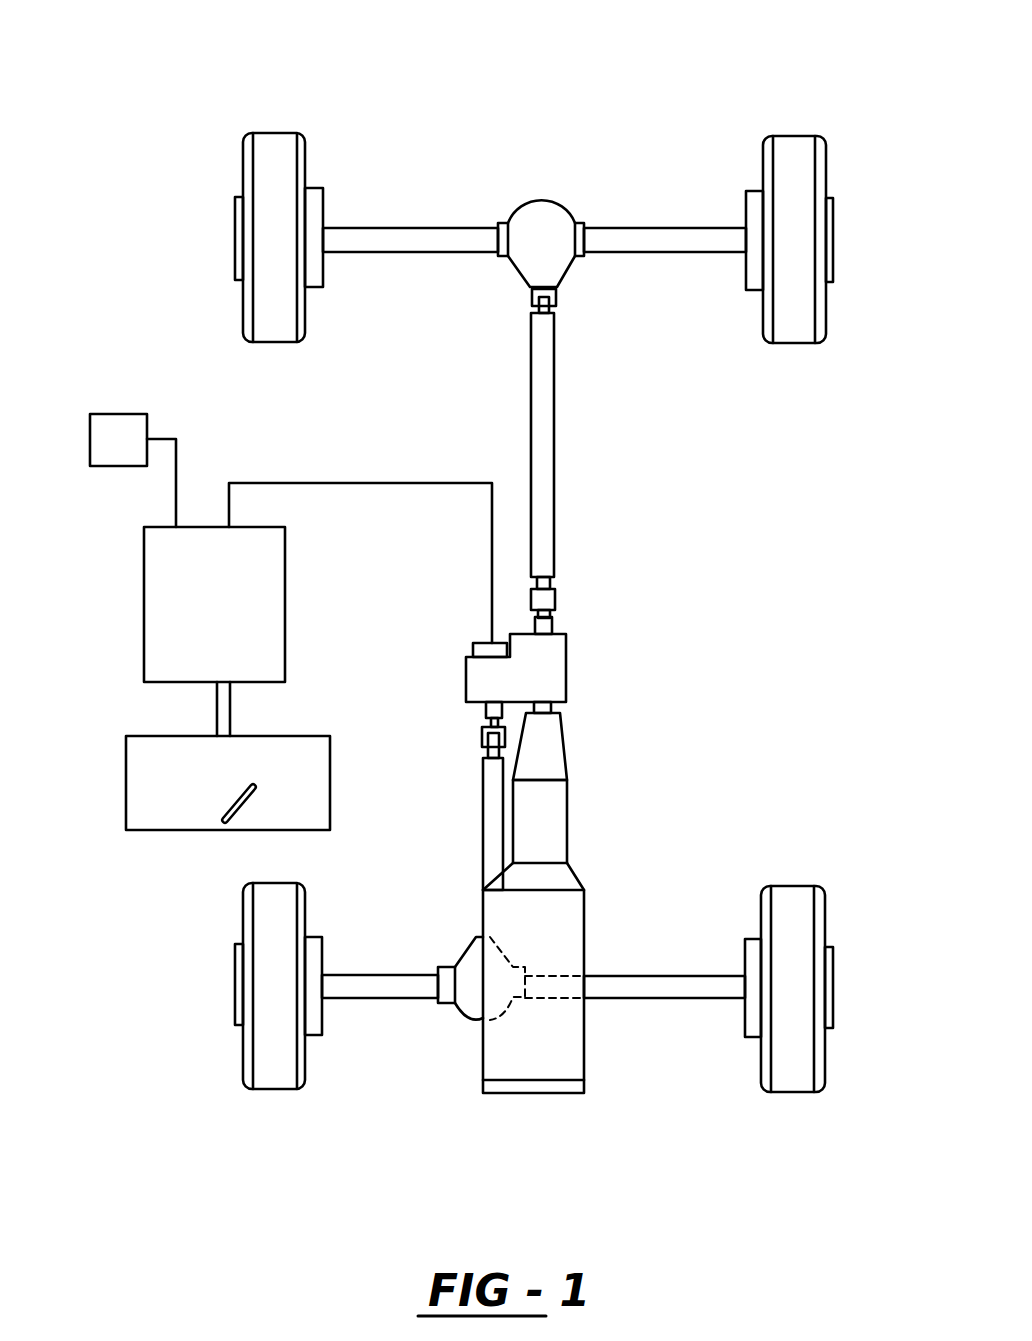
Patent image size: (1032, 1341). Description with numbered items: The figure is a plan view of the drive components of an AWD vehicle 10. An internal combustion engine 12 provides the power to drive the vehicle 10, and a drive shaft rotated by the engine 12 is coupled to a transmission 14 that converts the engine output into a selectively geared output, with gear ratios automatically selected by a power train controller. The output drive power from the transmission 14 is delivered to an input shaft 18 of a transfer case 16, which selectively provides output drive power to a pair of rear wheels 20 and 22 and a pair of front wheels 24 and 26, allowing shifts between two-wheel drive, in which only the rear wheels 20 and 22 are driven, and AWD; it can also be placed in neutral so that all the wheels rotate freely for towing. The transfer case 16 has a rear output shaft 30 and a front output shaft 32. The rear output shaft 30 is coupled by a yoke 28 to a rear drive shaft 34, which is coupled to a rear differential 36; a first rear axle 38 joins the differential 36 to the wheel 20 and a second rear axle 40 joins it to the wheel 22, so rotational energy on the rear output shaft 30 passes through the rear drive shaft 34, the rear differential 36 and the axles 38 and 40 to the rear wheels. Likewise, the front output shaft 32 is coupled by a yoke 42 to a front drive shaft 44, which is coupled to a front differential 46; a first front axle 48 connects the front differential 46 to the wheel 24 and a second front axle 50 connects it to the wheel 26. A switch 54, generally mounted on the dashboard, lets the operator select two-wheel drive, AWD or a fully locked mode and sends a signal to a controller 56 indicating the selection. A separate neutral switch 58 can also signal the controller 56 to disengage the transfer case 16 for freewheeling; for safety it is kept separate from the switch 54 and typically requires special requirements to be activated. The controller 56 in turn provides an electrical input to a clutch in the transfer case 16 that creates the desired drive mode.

The vehicle 10 is at (723, 95).
The internal combustion engine 12 is at (483, 1057).
The transmission 14 is at (567, 792).
The transfer case 16 is at (466, 670).
The input shaft 18 is at (555, 712).
The rear wheel 20 is at (279, 133).
The rear wheel 22 is at (795, 136).
The front wheel 24 is at (273, 1090).
The front wheel 26 is at (790, 1092).
The yoke 28 is at (556, 590).
The rear output shaft 30 is at (553, 626).
The front output shaft 32 is at (477, 712).
The rear drive shaft 34 is at (555, 390).
The rear differential 36 is at (528, 205).
The first rear axle 38 is at (400, 222).
The second rear axle 40 is at (644, 228).
The yoke 42 is at (482, 740).
The front drive shaft 44 is at (483, 800).
The front differential 46 is at (462, 948).
The first front axle 48 is at (345, 975).
The second front axle 50 is at (658, 976).
The switch 54 is at (126, 766).
The controller 56 is at (144, 580).
The neutral switch 58 is at (118, 414).